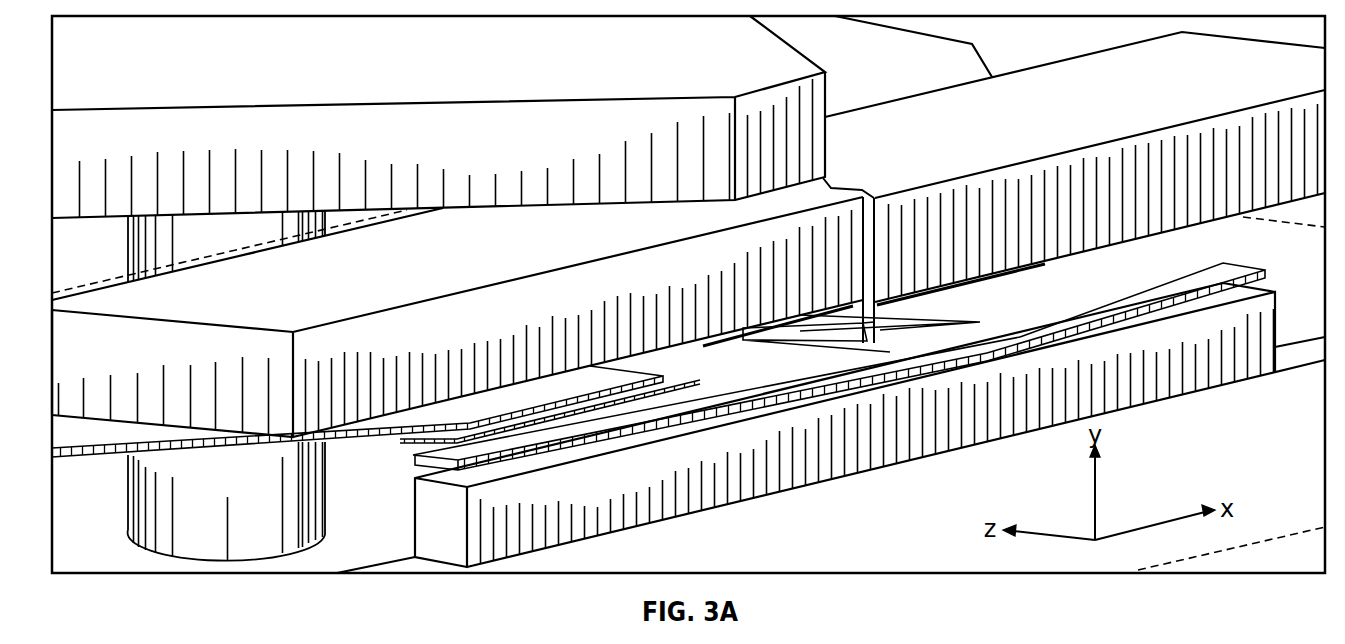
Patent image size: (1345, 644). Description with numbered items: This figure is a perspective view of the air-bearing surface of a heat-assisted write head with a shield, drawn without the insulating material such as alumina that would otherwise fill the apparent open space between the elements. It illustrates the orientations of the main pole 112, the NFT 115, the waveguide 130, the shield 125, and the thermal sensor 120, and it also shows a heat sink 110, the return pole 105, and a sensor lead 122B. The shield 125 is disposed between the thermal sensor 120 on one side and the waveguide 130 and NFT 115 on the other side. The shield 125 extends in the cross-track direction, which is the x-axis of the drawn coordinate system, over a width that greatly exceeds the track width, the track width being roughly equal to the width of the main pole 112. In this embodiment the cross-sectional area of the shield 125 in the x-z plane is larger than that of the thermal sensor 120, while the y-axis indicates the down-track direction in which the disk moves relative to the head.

The return pole 105 is at (440, 520).
The heat sink 110 is at (424, 283).
The main pole 112 is at (862, 189).
The NFT 115 is at (743, 338).
The thermal sensor 120 is at (783, 397).
The sensor lead 122B is at (192, 432).
The shield 125 is at (1034, 313).
The waveguide 130 is at (810, 332).